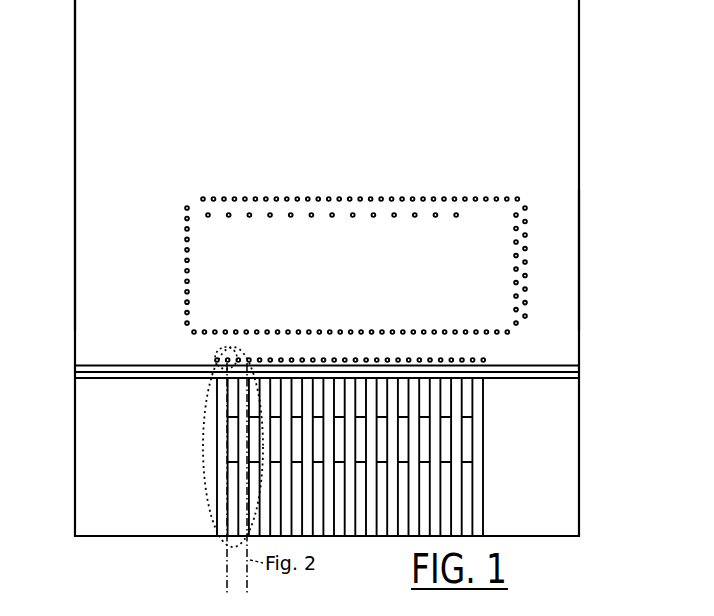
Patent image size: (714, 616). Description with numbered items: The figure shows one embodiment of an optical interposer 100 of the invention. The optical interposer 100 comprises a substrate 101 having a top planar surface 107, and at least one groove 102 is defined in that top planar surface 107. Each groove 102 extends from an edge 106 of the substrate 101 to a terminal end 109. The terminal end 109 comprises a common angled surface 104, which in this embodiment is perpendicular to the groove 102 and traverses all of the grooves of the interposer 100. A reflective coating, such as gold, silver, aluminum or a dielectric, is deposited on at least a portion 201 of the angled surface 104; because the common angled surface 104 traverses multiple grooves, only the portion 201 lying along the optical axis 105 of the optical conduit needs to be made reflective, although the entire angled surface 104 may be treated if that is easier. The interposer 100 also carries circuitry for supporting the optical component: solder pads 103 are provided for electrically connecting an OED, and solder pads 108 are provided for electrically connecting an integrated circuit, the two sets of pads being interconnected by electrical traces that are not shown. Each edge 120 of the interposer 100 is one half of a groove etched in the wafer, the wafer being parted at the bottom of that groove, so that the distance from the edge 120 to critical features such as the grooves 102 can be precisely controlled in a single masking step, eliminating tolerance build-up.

The optical interposer 100 is at (602, 207).
The substrate 101 is at (565, 453).
The groove 102 is at (223, 541).
The solder pads 103 is at (455, 360).
The common angled surface 104 is at (232, 382).
The optical axis 105 is at (224, 574).
The edge of the substrate 106 is at (112, 538).
The top planar surface 107 is at (93, 201).
The solder pads 108 is at (518, 197).
The terminal end 109 is at (217, 366).
The edge of the interposer 120 is at (75, 275).
The portion of the angled surface 201 is at (338, 608).